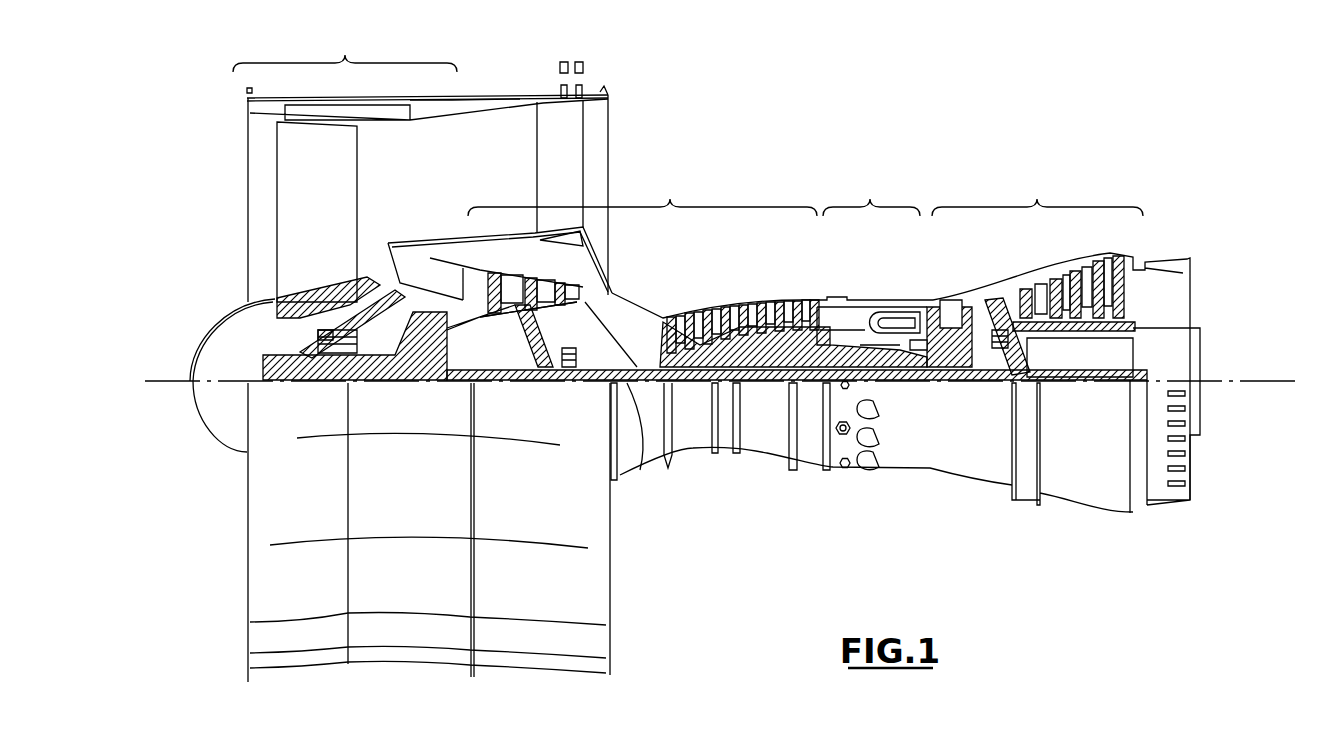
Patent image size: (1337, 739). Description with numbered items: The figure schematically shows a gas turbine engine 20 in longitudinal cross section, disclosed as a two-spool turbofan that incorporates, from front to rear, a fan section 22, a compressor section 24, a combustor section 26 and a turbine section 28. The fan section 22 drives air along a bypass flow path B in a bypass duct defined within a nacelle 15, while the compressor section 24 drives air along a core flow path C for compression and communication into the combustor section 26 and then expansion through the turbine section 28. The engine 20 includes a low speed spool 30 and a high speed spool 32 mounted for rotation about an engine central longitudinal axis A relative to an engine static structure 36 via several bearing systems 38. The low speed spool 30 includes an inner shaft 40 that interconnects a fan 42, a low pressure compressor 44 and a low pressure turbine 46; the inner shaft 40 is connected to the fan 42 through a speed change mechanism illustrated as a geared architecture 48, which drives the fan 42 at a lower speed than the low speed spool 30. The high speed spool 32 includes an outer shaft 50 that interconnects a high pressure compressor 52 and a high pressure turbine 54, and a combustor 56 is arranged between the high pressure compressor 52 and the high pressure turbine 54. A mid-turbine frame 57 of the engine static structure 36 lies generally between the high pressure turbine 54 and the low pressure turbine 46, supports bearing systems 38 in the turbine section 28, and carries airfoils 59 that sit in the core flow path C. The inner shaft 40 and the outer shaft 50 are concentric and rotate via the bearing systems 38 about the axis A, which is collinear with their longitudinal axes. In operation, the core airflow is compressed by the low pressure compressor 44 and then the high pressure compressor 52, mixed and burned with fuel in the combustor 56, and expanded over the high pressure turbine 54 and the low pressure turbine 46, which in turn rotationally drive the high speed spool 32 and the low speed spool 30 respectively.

The nacelle 15 is at (450, 97).
The gas turbine engine 20 is at (890, 145).
The fan section 22 is at (434, 353).
The compressor section 24 is at (660, 324).
The combustor section 26 is at (894, 295).
The turbine section 28 is at (1066, 340).
The low speed spool 30 is at (767, 392).
The high speed spool 32 is at (807, 343).
The engine static structure 36 is at (808, 474).
The bearing systems 38 is at (325, 372).
The inner shaft 40 is at (630, 383).
The fan 42 is at (303, 224).
The low pressure compressor 44 is at (545, 283).
The low pressure turbine 46 is at (1076, 275).
The geared architecture 48 is at (435, 362).
The outer shaft 50 is at (900, 357).
The high pressure compressor 52 is at (740, 340).
The high pressure turbine 54 is at (950, 305).
The combustor 56 is at (887, 317).
The mid-turbine frame 57 is at (992, 288).
The airfoils 59 is at (1030, 340).
The engine central longitudinal axis A is at (1283, 381).
The bypass flow path B is at (482, 172).
The core flow path C is at (428, 279).